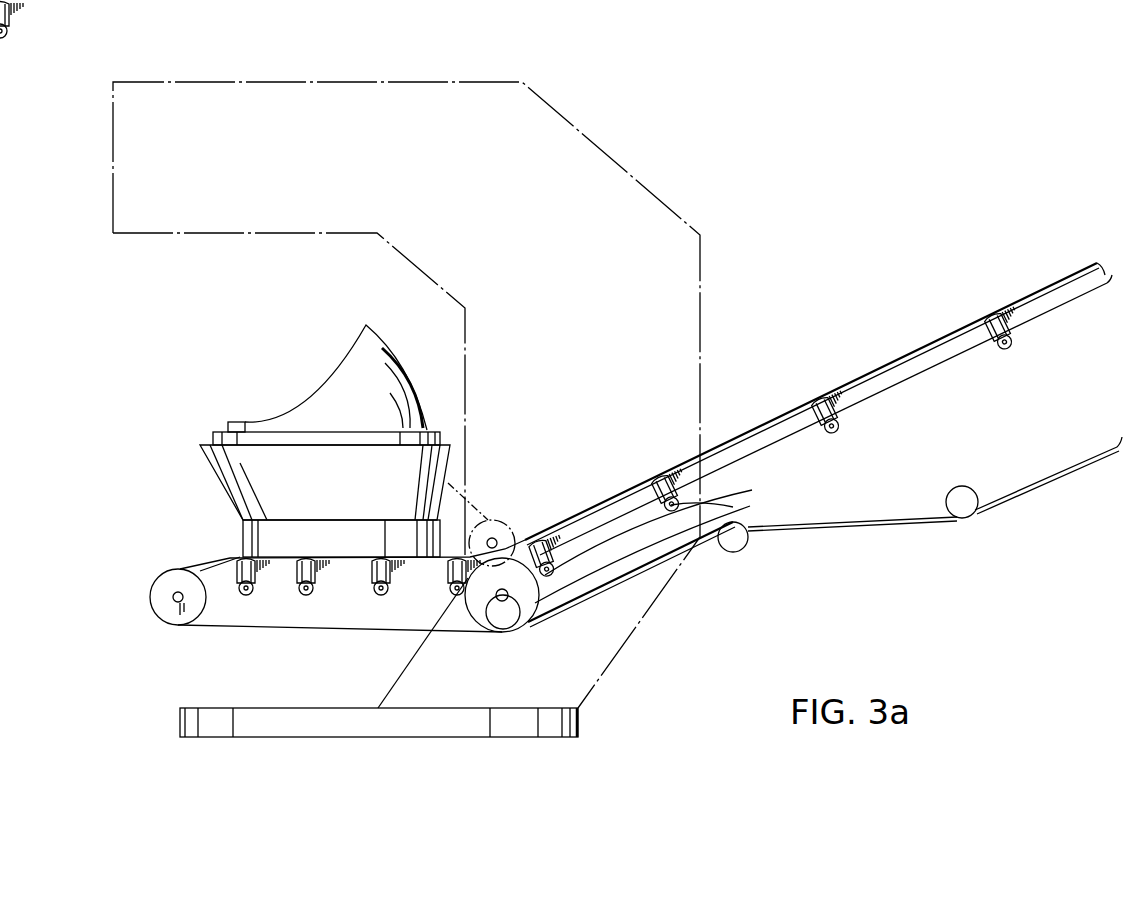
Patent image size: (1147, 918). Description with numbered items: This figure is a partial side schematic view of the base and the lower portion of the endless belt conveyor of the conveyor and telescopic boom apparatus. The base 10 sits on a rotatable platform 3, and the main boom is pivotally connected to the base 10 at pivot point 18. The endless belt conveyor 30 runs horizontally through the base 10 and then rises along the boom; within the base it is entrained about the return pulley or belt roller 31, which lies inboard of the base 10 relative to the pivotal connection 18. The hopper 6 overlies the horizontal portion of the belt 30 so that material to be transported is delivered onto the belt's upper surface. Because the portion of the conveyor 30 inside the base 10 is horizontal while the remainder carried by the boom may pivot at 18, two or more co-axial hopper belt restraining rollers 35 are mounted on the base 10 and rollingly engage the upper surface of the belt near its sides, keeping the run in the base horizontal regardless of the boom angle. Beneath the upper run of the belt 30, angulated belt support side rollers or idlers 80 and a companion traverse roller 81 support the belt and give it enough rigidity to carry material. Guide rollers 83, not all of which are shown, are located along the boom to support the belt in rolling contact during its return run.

The rotatable platform 3 is at (580, 727).
The hopper 6 is at (378, 397).
The base 10 is at (663, 275).
The pivot point 18 is at (536, 612).
The endless belt conveyor 30 is at (857, 515).
The return pulley or belt roller 31 is at (178, 602).
The hopper belt restraining rollers 35 is at (493, 520).
The angulated belt support side rollers or idlers 80 is at (815, 405).
The traverse roller 81 is at (690, 497).
The guide rollers 83 is at (503, 616).